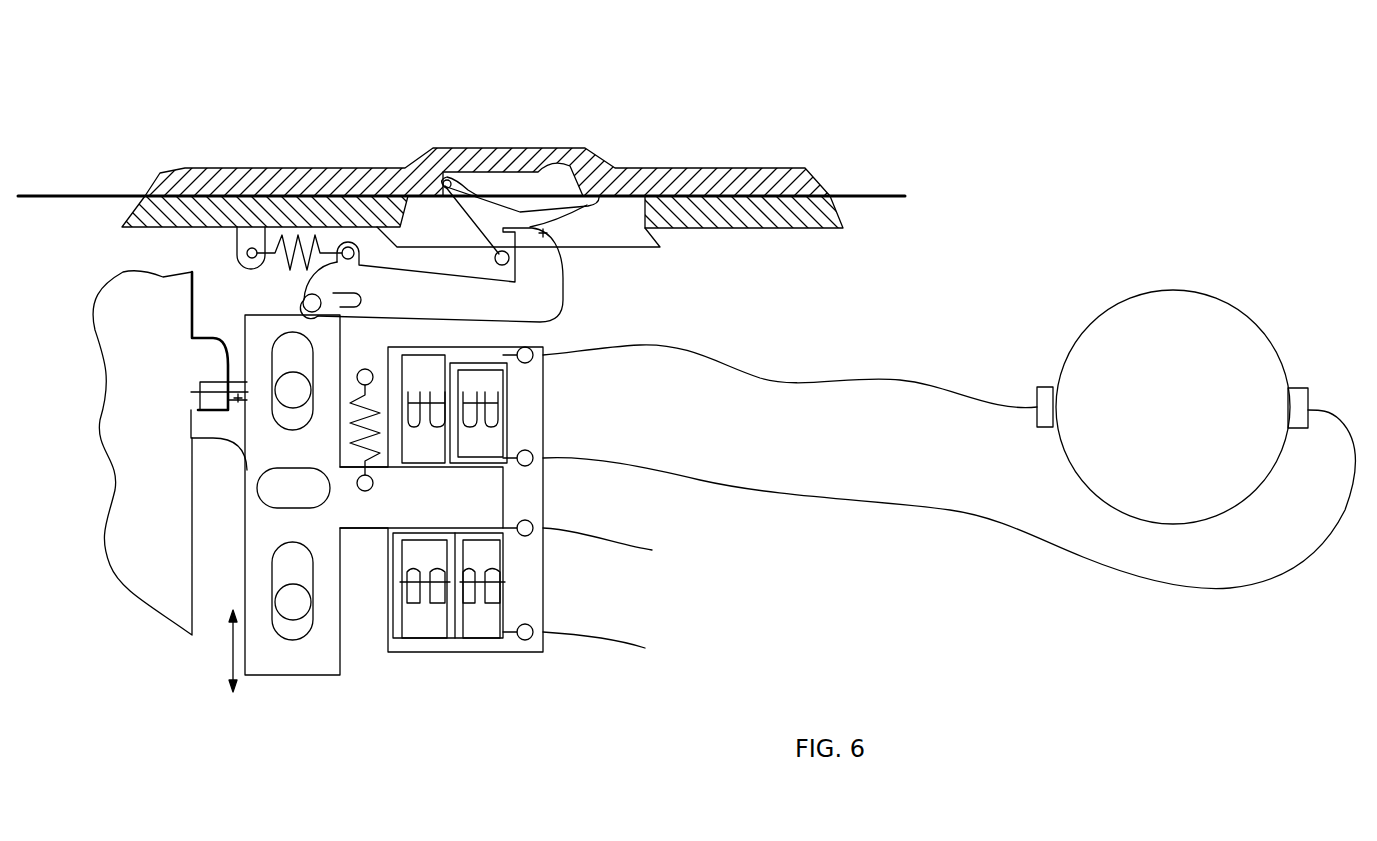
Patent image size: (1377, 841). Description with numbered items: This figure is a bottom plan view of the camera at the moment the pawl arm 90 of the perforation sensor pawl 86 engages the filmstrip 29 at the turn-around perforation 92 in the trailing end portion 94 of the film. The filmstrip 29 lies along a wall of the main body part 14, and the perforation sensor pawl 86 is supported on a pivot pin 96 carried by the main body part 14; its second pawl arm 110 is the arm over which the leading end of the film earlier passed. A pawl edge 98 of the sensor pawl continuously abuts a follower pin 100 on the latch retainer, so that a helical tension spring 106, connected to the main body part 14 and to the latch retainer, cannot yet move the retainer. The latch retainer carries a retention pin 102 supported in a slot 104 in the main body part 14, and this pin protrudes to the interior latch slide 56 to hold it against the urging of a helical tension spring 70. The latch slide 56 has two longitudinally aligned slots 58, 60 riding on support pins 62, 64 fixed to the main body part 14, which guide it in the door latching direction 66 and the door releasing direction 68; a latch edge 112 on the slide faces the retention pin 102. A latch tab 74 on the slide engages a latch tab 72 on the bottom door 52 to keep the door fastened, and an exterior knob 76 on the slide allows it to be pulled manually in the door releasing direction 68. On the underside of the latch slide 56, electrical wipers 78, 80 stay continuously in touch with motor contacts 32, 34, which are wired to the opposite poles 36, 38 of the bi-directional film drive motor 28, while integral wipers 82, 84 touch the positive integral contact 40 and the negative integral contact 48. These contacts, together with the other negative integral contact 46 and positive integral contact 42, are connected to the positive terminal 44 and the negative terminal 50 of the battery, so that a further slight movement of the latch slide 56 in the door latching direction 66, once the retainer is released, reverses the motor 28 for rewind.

The main body part 14 is at (773, 177).
The bi-directional film drive motor 28 is at (1158, 390).
The filmstrip 29 is at (97, 195).
The motor contact 32 is at (428, 362).
The motor contact 34 is at (483, 372).
The motor pole 36 is at (1047, 390).
The motor pole 38 is at (1300, 395).
The positive integral contact 40 is at (425, 630).
The positive integral contact 42 is at (500, 532).
The positive terminal 44 is at (699, 557).
The negative integral contact 46 is at (455, 535).
The negative integral contact 48 is at (490, 630).
The negative terminal 50 is at (699, 669).
The bottom door 52 is at (134, 530).
The interior latch slide 56 is at (328, 676).
The slot 58 is at (287, 425).
The slot 60 is at (292, 635).
The support pin 62 is at (288, 377).
The support pin 64 is at (290, 585).
The door latching direction 66 is at (233, 628).
The door releasing direction 68 is at (233, 690).
The helical tension spring 70 is at (348, 432).
The latch tab 72 is at (217, 400).
The latch tab 74 is at (240, 408).
The exterior knob 76 is at (265, 490).
The electrical wiper 78 is at (440, 430).
The electrical wiper 80 is at (490, 440).
The electrical wiper 82 is at (415, 558).
The electrical wiper 84 is at (493, 562).
The perforation sensor pawl 86 is at (594, 231).
The pawl arm 90 is at (447, 179).
The turn-around perforation 92 is at (467, 190).
The trailing end portion 94 is at (388, 205).
The pivot pin 96 is at (494, 258).
The pawl edge 98 is at (567, 228).
The follower pin 100 is at (455, 281).
The retention pin 102 is at (306, 300).
The slot 104 is at (368, 305).
The helical tension spring 106 is at (290, 235).
The pawl arm 110 is at (583, 197).
The latch edge 112 is at (347, 357).